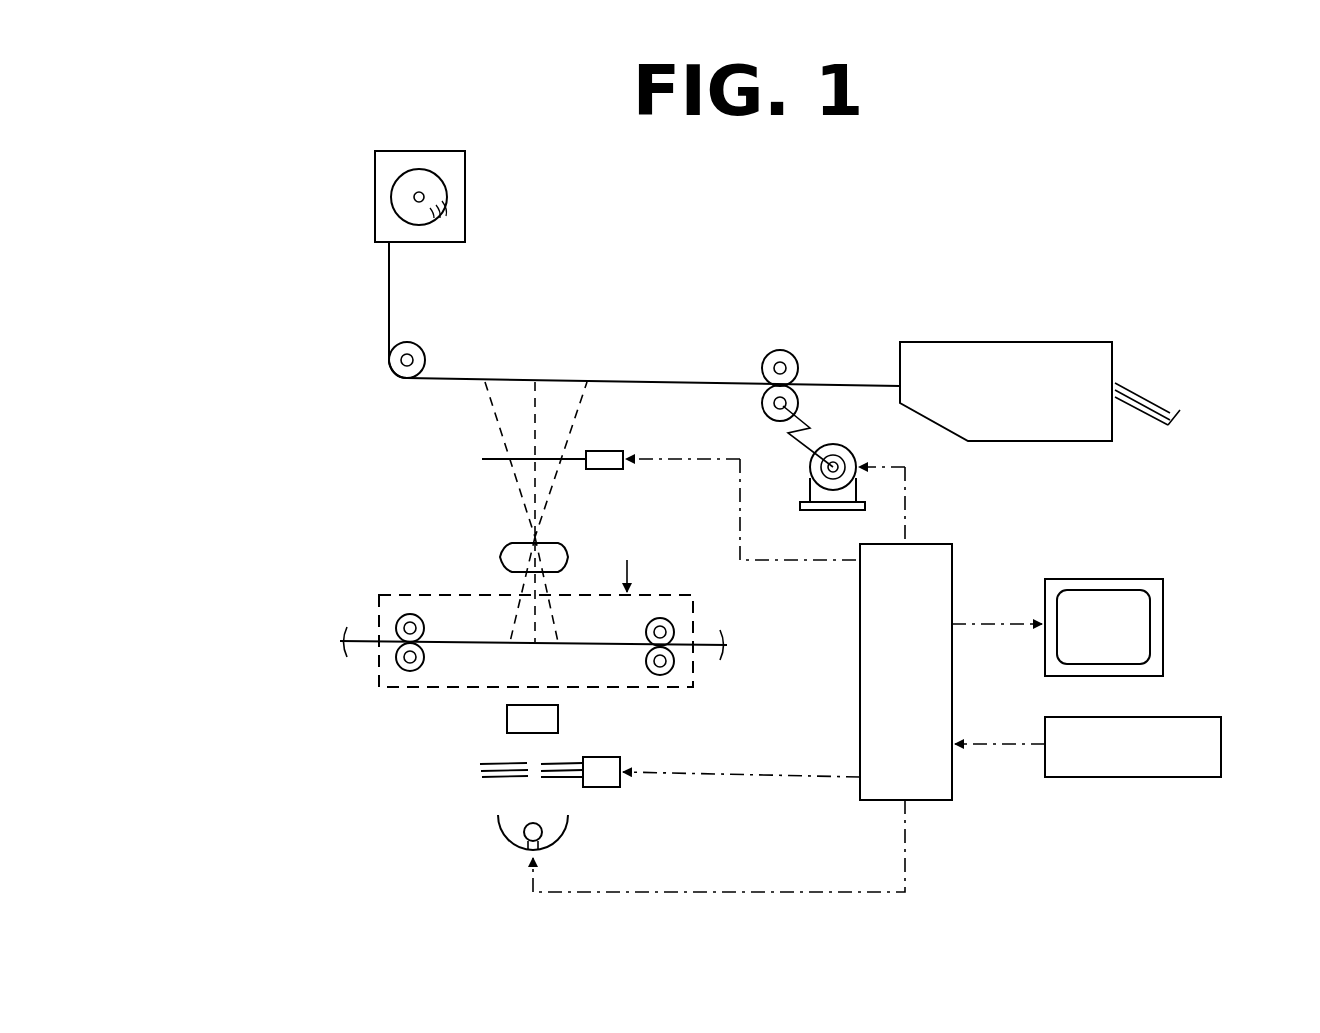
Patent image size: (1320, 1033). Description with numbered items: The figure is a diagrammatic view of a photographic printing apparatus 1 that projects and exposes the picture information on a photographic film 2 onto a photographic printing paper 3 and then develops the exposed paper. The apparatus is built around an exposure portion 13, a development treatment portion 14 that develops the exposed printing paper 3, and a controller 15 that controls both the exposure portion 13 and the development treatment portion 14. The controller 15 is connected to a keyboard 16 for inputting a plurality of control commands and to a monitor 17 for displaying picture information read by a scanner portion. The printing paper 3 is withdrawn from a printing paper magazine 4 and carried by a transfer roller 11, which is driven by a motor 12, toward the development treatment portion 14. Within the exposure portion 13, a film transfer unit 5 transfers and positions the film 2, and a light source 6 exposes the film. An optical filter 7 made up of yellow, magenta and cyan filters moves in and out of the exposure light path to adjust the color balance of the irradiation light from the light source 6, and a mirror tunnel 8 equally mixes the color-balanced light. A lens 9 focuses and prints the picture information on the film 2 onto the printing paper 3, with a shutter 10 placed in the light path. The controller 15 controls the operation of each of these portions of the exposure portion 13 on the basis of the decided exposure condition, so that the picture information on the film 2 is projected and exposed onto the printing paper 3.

The photographic printing apparatus 1 is at (338, 444).
The photographic film 2 is at (704, 632).
The photographic printing paper 3 is at (389, 293).
The printing paper magazine 4 is at (465, 198).
The film transfer unit 5 is at (673, 688).
The light source 6 is at (503, 838).
The optical filter 7 is at (573, 757).
The mirror tunnel 8 is at (507, 716).
The lens 9 is at (500, 552).
The shutter 10 is at (574, 455).
The transfer roller 11 is at (418, 348).
The motor 12 is at (853, 456).
The exposure portion 13 is at (662, 538).
The development treatment portion 14 is at (1090, 332).
The controller 15 is at (935, 544).
The keyboard 16 is at (1221, 718).
The monitor 17 is at (1163, 581).